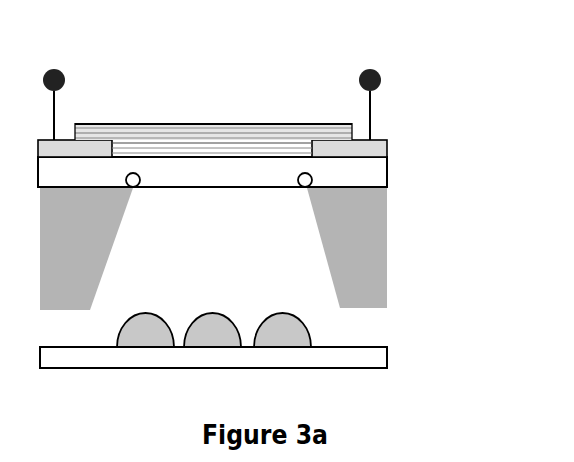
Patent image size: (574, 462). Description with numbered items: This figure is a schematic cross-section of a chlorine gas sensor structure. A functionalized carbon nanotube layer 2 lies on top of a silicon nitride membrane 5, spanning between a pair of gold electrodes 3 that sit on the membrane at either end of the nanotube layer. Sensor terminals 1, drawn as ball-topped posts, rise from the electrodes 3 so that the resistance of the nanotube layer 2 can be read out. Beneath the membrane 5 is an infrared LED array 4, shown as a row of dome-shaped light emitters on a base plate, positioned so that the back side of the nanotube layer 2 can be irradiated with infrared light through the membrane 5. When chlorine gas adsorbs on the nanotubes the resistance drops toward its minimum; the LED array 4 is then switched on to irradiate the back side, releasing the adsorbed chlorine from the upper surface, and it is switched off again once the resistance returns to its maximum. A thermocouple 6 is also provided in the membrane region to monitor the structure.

The ball contact 1 is at (211, 73).
The layered component 2 is at (181, 110).
The contact pad 3 is at (400, 131).
The substrate with bumps 4 is at (402, 355).
The carrier bar 5 is at (385, 172).
The hole 6 is at (285, 212).